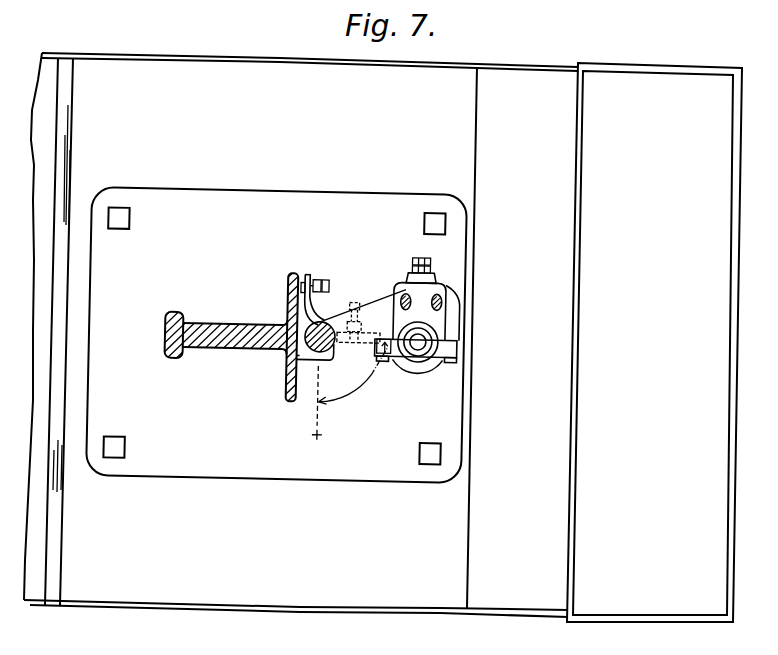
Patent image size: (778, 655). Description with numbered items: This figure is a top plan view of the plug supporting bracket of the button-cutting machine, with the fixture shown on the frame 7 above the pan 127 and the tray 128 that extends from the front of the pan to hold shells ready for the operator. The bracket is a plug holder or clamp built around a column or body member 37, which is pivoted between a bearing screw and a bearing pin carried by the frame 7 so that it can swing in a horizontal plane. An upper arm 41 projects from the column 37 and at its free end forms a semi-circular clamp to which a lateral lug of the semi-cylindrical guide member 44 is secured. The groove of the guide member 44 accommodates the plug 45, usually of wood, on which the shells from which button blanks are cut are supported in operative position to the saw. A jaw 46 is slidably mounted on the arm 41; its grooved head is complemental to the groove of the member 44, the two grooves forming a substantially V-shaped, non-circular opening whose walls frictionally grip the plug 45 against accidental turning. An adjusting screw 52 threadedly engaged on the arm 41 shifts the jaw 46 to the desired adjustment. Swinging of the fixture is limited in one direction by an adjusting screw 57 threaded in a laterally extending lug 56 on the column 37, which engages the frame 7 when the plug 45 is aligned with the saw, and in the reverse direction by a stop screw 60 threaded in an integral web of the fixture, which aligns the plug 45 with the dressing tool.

The frame 7 is at (199, 321).
The column or body member 37 is at (350, 394).
The upper arm 41 is at (453, 313).
The semi-cylindrical guide member 44 is at (433, 363).
The plug 45 is at (404, 360).
The jaw 46 is at (402, 286).
The adjusting screw 52 is at (418, 258).
The laterally extending lug 56 is at (308, 280).
The adjusting screw 57 is at (324, 283).
The stop screw 60 is at (352, 303).
The pan 127 is at (277, 595).
The tray 128 is at (697, 82).